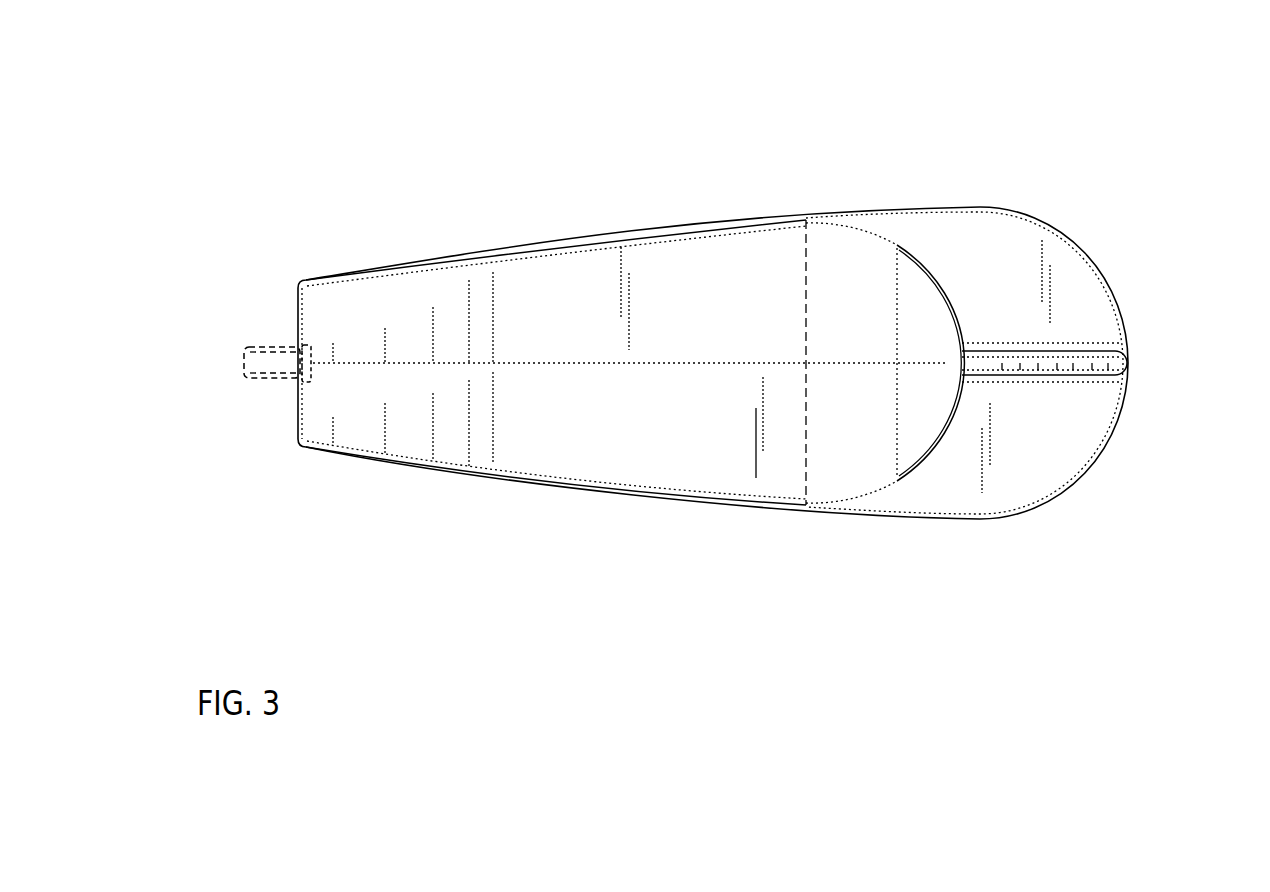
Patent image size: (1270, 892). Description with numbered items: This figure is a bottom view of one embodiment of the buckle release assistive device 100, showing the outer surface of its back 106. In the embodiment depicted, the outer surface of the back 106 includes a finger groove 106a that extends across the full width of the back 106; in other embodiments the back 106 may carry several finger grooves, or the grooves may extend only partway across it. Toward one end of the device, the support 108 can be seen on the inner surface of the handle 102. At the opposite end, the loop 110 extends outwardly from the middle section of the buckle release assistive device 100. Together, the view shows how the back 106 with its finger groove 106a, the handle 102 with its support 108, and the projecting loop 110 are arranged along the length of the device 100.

The buckle release assistive device 100 is at (390, 123).
The handle 102 is at (1027, 297).
The back 106 is at (587, 430).
The finger groove 106a is at (882, 427).
The support 108 is at (1100, 324).
The loop 110 is at (237, 324).